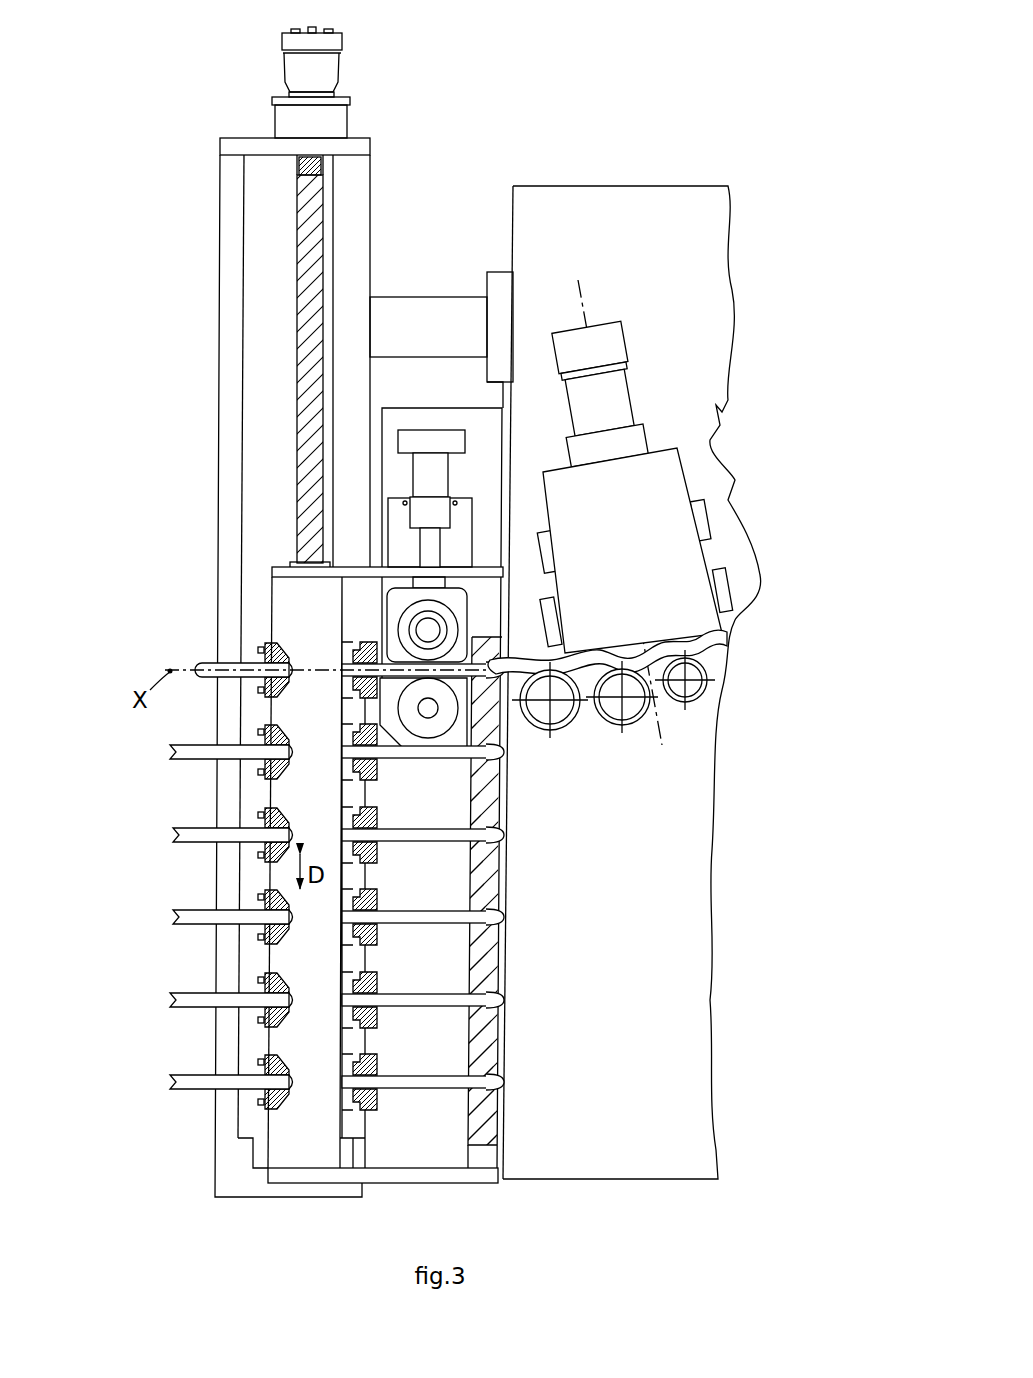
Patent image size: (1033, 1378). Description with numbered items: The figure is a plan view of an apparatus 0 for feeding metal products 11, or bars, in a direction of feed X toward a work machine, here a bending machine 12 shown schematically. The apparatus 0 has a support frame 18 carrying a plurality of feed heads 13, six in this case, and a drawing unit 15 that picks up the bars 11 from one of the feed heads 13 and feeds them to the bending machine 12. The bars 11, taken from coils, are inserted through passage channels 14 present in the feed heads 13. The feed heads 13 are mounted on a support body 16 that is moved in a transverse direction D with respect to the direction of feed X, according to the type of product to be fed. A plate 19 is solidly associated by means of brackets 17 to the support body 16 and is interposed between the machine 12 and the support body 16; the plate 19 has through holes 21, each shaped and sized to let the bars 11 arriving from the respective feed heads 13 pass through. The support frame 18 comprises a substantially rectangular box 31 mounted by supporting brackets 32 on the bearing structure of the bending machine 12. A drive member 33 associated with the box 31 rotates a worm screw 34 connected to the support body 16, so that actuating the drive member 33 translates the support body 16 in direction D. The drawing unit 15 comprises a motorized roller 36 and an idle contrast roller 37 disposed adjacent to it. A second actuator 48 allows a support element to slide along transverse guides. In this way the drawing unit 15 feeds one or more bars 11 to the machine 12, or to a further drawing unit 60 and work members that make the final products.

The device 0 is at (152, 578).
The metal products 11 is at (215, 667).
The bending machine 12 is at (650, 206).
The feed heads 13 is at (270, 740).
The passage channels 14 is at (281, 676).
The drawing unit 15 is at (373, 586).
The support body 16 is at (280, 1153).
The brackets 17 is at (467, 572).
The support frame 18 is at (357, 229).
The plate 19 is at (483, 1123).
The through holes 21 is at (495, 671).
The box 31 is at (230, 233).
The supporting brackets 32 is at (435, 315).
The drive member 33 is at (326, 78).
The worm screw 34 is at (305, 330).
The motorized roller 36 is at (457, 606).
The contrast roller 37 is at (439, 712).
The second actuator 48 is at (430, 477).
The drawing unit 60 is at (719, 551).